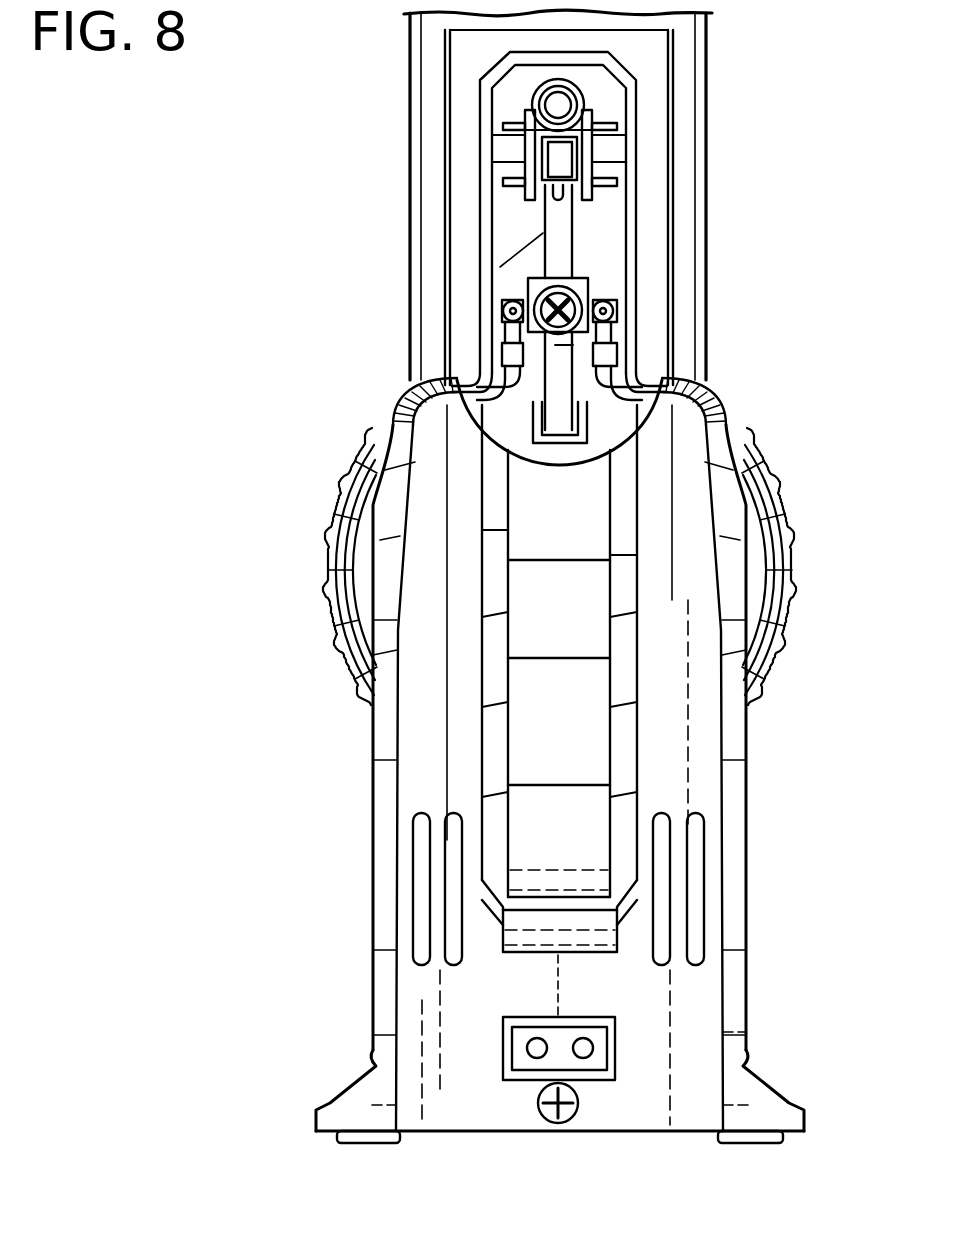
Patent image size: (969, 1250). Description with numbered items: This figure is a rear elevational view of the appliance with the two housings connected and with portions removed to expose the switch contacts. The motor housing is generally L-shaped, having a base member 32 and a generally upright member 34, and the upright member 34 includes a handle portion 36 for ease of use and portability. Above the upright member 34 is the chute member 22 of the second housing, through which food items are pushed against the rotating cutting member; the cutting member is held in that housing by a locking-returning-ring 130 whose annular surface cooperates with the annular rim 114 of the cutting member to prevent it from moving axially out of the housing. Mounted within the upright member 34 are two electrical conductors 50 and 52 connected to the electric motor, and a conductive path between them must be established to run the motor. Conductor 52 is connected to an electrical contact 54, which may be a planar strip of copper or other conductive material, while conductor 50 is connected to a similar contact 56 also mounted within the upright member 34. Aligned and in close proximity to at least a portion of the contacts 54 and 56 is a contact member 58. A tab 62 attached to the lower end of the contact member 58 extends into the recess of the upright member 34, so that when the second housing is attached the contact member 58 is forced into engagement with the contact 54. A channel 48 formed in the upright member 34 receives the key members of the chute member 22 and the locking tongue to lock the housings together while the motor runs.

The chute member 22 is at (712, 143).
The base member 32 is at (748, 1020).
The upright member 34 is at (700, 667).
The handle portion 36 is at (643, 733).
The channel 48 is at (508, 153).
The electrical conductor 50 is at (455, 383).
The electrical conductor 52 is at (625, 382).
The electrical contact 54 is at (563, 420).
The contact 56 is at (513, 282).
The contact member 58 is at (565, 278).
The tab 62 is at (590, 427).
The annular rim 114 is at (362, 560).
The locking-returning-ring 130 is at (790, 484).